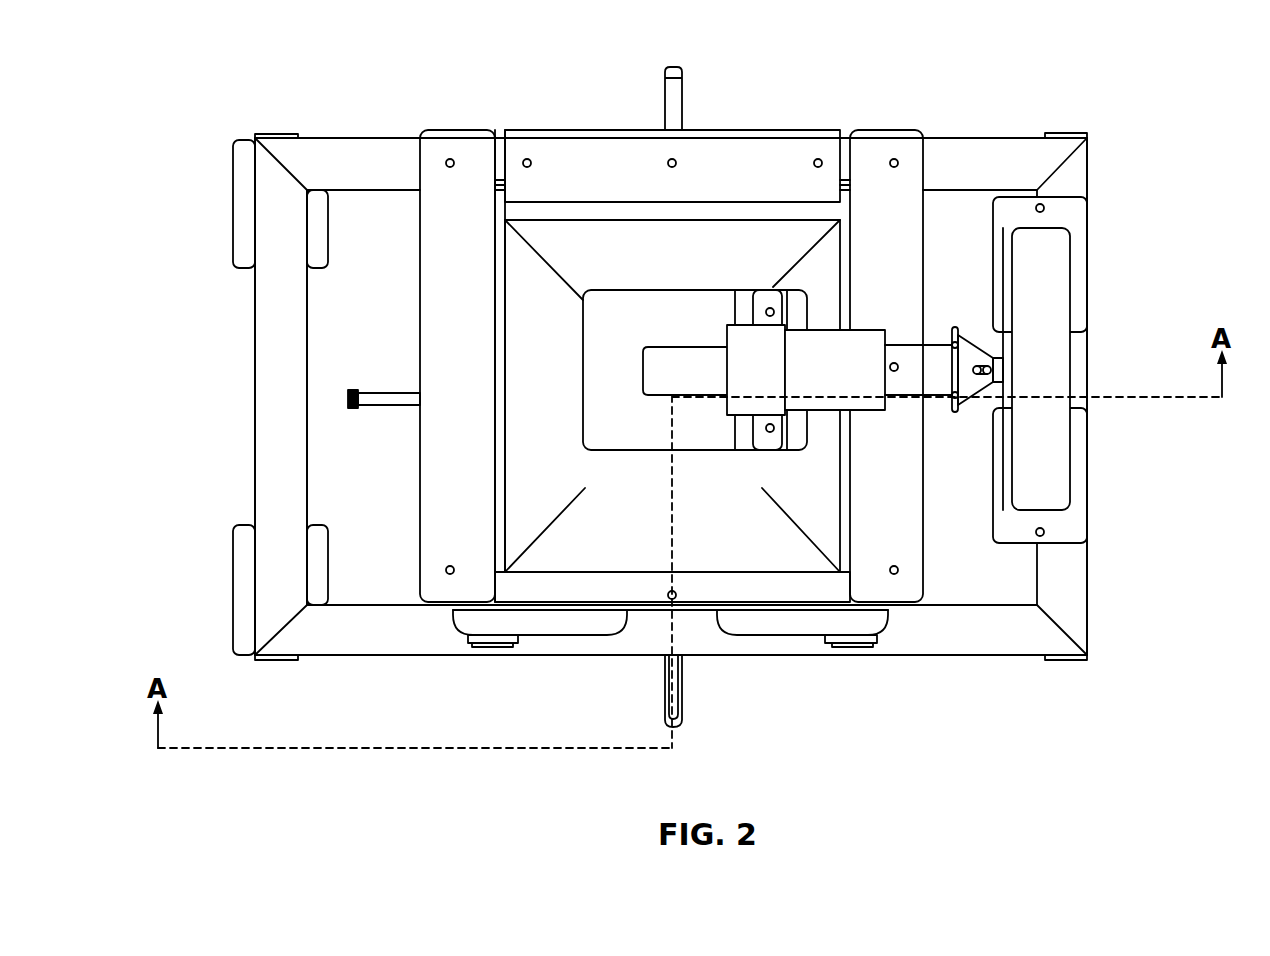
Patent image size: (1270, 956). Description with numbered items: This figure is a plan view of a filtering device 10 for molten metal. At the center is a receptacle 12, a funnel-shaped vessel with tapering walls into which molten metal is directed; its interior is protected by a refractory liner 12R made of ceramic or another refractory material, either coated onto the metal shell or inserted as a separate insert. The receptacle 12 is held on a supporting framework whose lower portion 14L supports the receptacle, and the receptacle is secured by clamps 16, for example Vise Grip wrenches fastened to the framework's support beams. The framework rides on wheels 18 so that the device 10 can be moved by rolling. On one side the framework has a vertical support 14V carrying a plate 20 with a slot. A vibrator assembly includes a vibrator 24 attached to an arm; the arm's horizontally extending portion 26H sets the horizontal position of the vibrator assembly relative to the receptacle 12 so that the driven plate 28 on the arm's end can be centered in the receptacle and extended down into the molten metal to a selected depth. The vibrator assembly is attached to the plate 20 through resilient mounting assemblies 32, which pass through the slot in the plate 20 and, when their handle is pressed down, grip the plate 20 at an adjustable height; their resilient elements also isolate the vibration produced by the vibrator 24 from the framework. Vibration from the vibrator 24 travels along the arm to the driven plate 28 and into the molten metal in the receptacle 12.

The filtering device 10 is at (1176, 90).
The receptacle 12 is at (500, 130).
The refractory liner 12R is at (622, 253).
The lower portion 14L is at (256, 384).
The vertical support 14V is at (1055, 290).
The clamps 16 is at (666, 93).
The wheels 18 is at (860, 647).
The plate 20 is at (1008, 512).
The vibrator 24 is at (832, 348).
The horizontally extending portion 26H is at (660, 320).
The driven plate 28 is at (693, 360).
The resilient mounting assemblies 32 is at (985, 354).